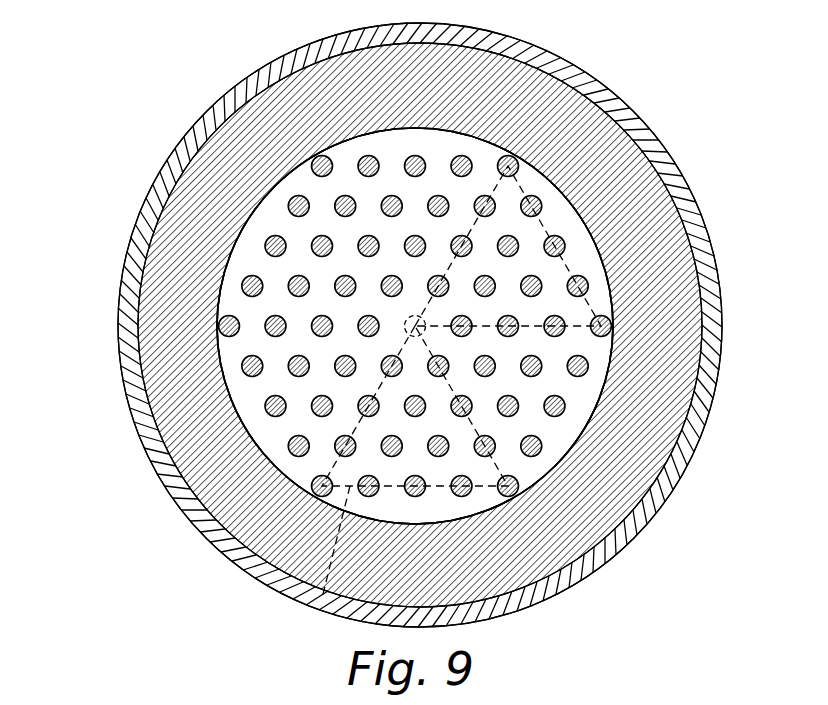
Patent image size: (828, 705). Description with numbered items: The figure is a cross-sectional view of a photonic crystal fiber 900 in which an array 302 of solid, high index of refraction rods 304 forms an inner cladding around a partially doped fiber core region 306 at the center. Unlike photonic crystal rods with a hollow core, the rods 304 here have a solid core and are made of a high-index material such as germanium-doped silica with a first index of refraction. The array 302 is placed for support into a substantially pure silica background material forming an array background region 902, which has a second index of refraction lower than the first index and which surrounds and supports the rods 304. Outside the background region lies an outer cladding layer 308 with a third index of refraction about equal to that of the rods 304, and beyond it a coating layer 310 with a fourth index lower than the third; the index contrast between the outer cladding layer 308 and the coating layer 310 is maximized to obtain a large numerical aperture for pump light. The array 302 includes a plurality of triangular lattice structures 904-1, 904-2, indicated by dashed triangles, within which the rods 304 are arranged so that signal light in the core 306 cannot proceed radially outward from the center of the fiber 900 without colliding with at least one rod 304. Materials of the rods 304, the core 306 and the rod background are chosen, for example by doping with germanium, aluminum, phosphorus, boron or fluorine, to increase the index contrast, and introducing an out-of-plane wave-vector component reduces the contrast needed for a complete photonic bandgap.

The photonic crystal fiber 900 is at (140, 92).
The coating layer 310 is at (617, 112).
The outer cladding layer 308 is at (673, 273).
The array 302 is at (257, 260).
The rods 304 is at (313, 488).
The fiber core region 306 is at (430, 334).
The array background region 902 is at (567, 433).
The triangular lattice structure 904-1 is at (318, 600).
The triangular lattice structure 904-2 is at (545, 225).